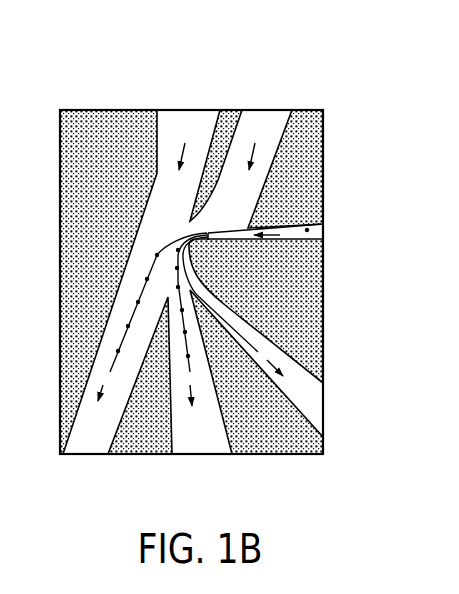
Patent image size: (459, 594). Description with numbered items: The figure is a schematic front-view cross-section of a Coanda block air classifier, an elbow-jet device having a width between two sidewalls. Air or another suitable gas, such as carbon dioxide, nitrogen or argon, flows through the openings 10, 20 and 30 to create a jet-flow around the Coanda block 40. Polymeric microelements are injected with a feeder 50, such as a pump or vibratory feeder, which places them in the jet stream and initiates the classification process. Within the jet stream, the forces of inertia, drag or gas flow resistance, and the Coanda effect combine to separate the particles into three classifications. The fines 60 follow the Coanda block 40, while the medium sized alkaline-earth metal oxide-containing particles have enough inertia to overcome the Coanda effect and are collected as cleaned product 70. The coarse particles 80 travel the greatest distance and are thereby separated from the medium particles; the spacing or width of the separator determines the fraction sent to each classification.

The opening 10 is at (187, 118).
The opening 20 is at (265, 118).
The opening 30 is at (320, 232).
The Coanda block 40 is at (285, 303).
The feeder 50 is at (307, 230).
The fines 60 is at (317, 402).
The cleaned product 70 is at (202, 442).
The coarse particles 80 is at (88, 437).